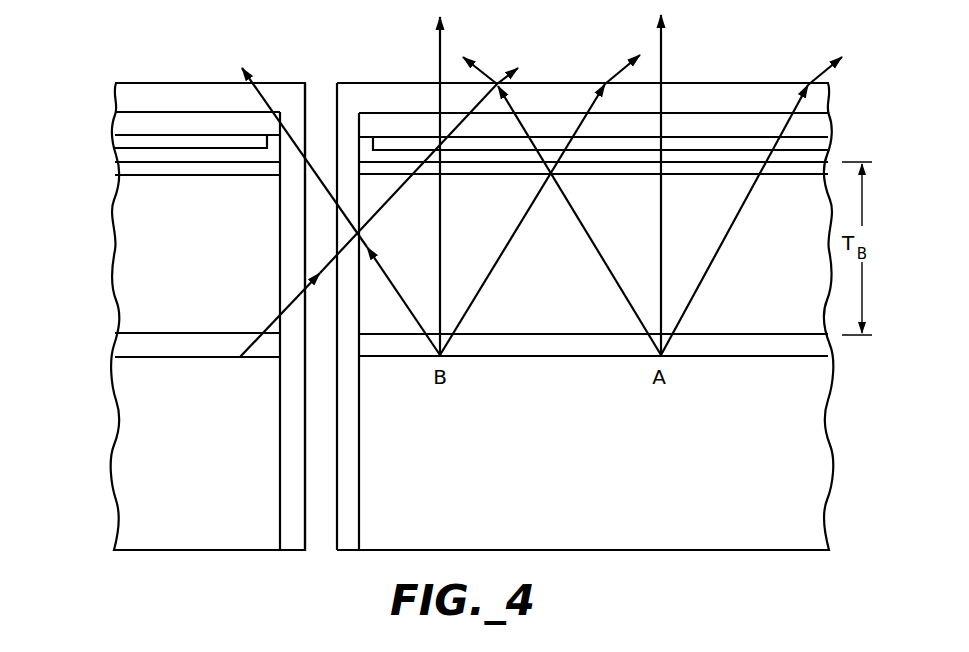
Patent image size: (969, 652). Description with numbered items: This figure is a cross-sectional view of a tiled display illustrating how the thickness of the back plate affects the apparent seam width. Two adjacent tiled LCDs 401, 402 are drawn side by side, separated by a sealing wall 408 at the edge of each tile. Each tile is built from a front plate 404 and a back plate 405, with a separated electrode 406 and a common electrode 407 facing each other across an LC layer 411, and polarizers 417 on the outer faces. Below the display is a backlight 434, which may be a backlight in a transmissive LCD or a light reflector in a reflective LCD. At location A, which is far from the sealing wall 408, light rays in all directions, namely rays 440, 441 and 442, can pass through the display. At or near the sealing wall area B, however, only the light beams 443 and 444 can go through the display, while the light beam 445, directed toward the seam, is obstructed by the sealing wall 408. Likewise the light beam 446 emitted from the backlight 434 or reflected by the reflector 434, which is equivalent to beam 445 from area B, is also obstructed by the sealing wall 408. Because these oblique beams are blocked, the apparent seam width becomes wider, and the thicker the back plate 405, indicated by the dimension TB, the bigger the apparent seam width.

The tiled LCD 401 is at (100, 168).
The tiled LCD 402 is at (837, 115).
The front plate 404 is at (137, 110).
The back plate 405 is at (150, 270).
The separated electrode 406 is at (205, 150).
The common electrode 407 is at (152, 170).
The sealing wall 408 is at (350, 538).
The LC layer 411 is at (123, 157).
The polarizers 417 is at (773, 97).
The backlight 434 is at (152, 433).
The light ray 440 is at (487, 72).
The light ray 441 is at (663, 57).
The light ray 442 is at (820, 68).
The light beam 443 is at (440, 60).
The light beam 444 is at (617, 72).
The light beam 445 is at (401, 297).
The light beam 446 is at (270, 325).